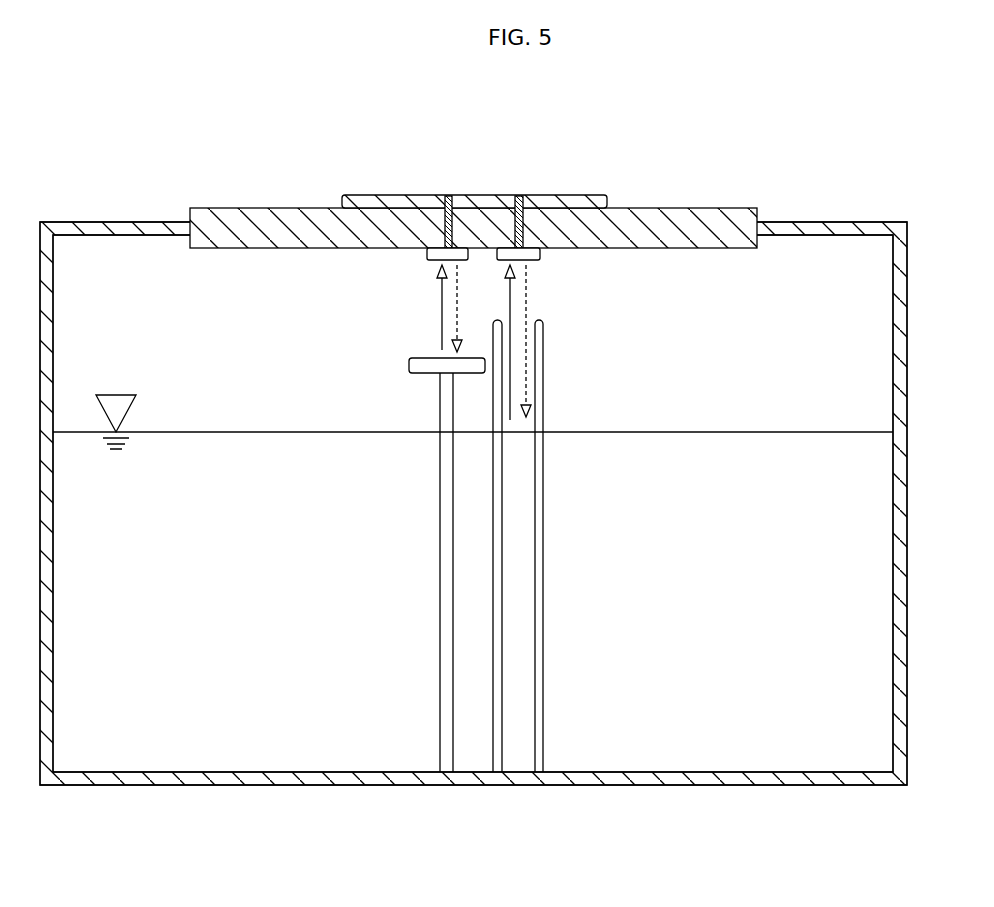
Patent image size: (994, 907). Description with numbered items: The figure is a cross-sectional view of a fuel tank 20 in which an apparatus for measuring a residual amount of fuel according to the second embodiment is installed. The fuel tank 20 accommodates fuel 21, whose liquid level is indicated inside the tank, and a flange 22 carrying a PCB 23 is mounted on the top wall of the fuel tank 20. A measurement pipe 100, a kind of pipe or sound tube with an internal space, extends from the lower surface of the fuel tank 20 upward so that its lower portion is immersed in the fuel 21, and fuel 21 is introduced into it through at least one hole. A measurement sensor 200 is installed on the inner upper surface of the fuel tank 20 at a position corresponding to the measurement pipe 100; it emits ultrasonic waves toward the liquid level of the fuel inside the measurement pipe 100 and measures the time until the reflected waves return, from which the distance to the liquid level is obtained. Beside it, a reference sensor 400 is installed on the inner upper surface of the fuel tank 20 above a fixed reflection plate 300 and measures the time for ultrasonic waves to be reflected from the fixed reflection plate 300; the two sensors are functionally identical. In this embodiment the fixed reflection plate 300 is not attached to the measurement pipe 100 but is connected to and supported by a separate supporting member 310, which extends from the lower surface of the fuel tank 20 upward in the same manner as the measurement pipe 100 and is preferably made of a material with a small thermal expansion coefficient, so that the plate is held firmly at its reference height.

The fuel tank 20 is at (105, 222).
The fuel 21 is at (213, 432).
The flange 22 is at (233, 208).
The PCB 23 is at (355, 195).
The measurement pipe 100 is at (455, 473).
The measurement sensor 200 is at (508, 197).
The fixed reflection plate 300 is at (418, 373).
The supporting member 310 is at (440, 647).
The reference sensor 400 is at (431, 197).